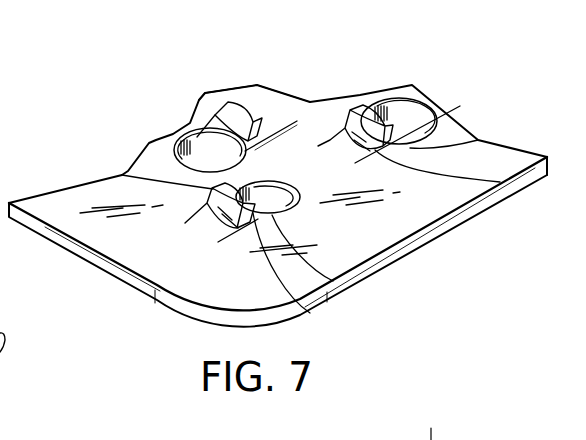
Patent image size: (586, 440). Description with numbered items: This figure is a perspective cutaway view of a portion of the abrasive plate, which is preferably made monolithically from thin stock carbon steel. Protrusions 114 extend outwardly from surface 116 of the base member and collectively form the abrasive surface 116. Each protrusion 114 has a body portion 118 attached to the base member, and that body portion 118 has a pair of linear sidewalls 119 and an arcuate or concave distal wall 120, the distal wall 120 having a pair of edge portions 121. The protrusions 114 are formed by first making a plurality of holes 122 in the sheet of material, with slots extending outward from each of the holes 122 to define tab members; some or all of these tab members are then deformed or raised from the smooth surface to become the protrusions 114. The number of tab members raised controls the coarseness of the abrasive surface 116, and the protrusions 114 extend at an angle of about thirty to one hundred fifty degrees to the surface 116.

The protrusions 114 is at (108, 181).
The abrasive surface 116 is at (541, 179).
The body portion 118 is at (493, 162).
The linear sidewalls 119 is at (262, 134).
The arcuate or concave distal wall 120 is at (257, 85).
The edge portions 121 is at (140, 173).
The holes 122 is at (193, 137).